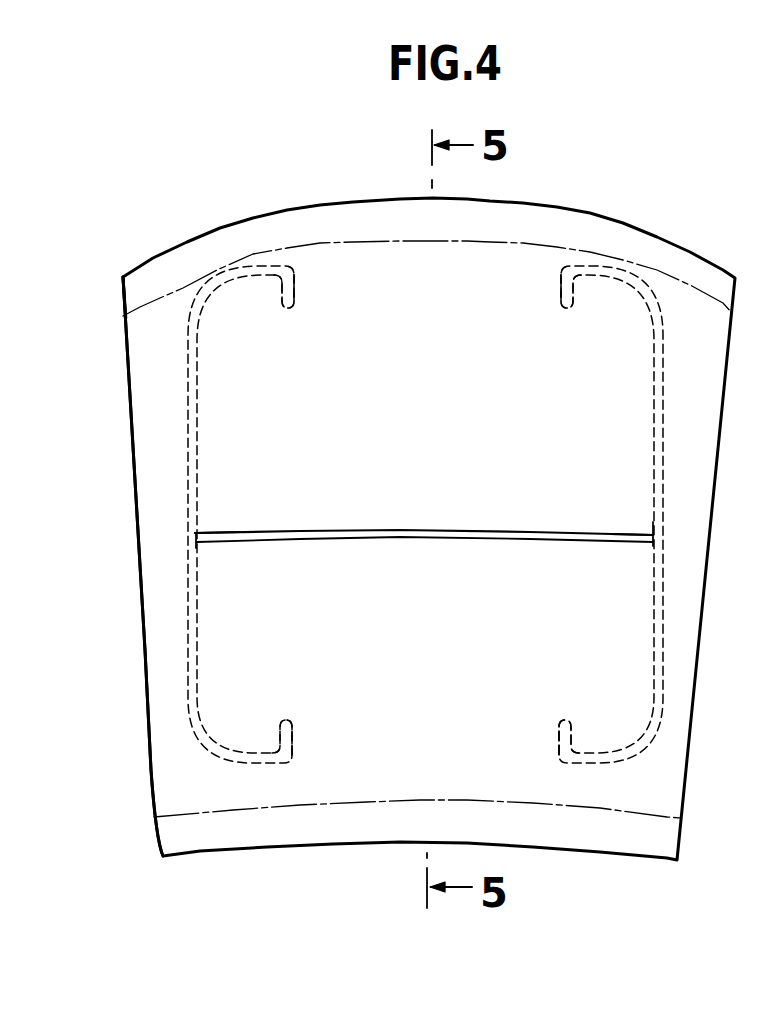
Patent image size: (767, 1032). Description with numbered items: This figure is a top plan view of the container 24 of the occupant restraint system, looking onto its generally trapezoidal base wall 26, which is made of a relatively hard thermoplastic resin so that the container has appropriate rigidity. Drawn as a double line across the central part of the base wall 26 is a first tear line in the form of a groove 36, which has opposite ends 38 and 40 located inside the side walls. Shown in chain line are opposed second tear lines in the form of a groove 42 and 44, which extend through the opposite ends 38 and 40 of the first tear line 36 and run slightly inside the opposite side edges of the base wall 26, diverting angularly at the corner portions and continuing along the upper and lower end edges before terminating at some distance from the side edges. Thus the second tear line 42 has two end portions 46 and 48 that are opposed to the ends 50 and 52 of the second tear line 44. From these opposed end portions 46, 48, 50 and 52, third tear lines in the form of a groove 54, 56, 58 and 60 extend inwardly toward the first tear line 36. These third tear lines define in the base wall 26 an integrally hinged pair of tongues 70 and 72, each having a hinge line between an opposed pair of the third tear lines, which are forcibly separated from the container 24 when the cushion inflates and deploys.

The container 24 is at (575, 200).
The base wall 26 is at (153, 365).
The first tear line in the form of a groove 36 is at (423, 530).
The end of first tear line 38 is at (195, 533).
The end of first tear line 40 is at (653, 535).
The second tear line in the form of a groove 42 is at (197, 455).
The second tear line in the form of a groove 44 is at (657, 466).
The end portion of second tear line 46 is at (263, 753).
The end portion of second tear line 48 is at (273, 272).
The end of second tear line 50 is at (575, 753).
The end of second tear line 52 is at (582, 274).
The third tear line in the form of a groove 54 is at (292, 735).
The third tear line in the form of a groove 56 is at (558, 733).
The third tear line in the form of a groove 58 is at (296, 285).
The third tear line in the form of a groove 60 is at (561, 280).
The tongue 70 is at (393, 765).
The tongue 72 is at (407, 268).